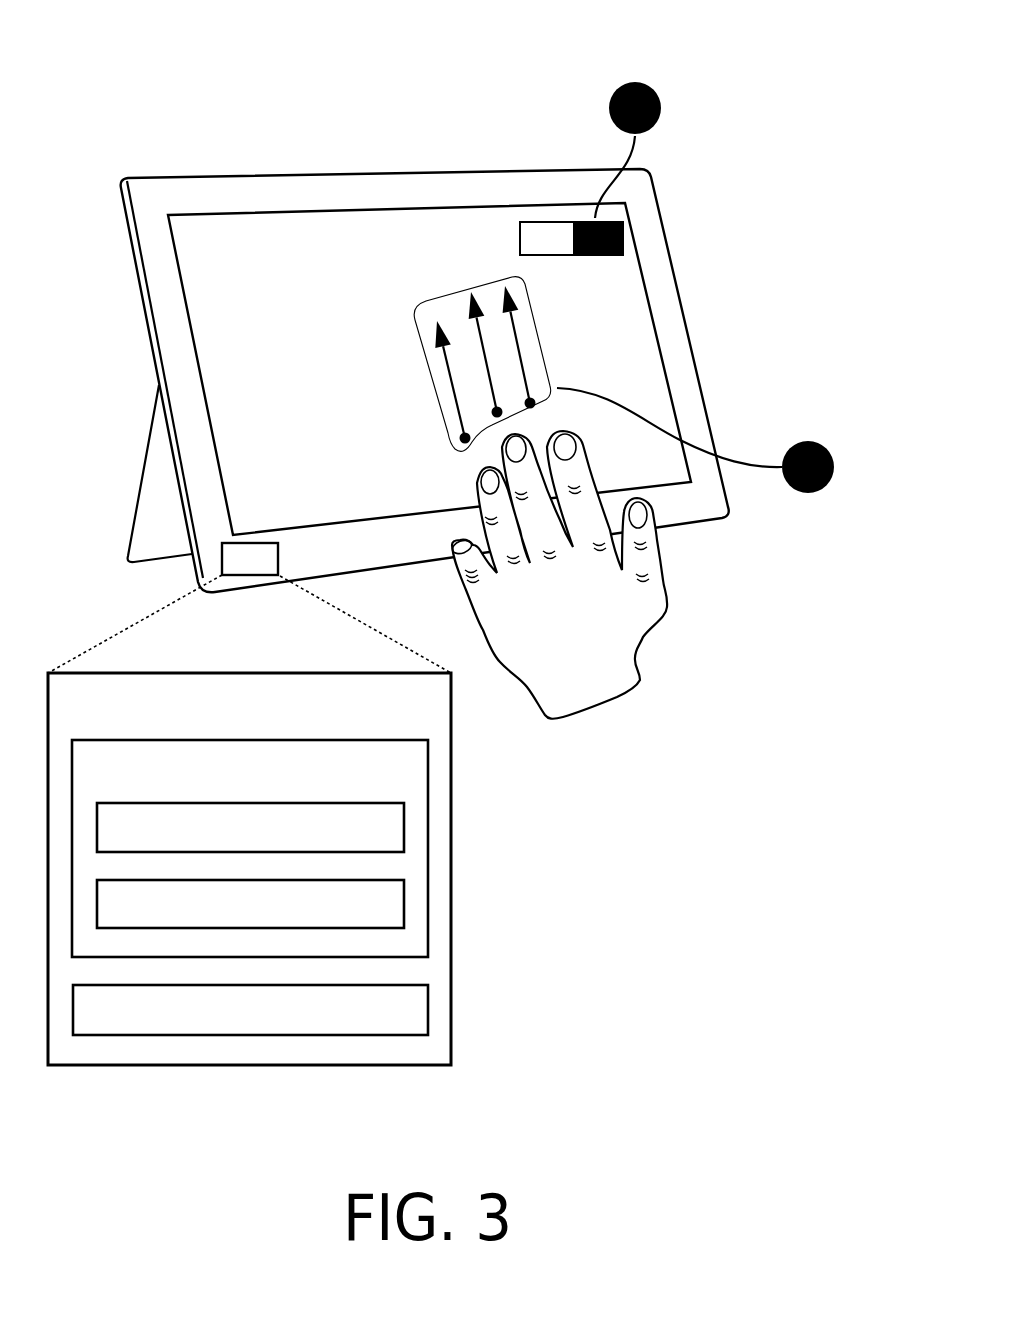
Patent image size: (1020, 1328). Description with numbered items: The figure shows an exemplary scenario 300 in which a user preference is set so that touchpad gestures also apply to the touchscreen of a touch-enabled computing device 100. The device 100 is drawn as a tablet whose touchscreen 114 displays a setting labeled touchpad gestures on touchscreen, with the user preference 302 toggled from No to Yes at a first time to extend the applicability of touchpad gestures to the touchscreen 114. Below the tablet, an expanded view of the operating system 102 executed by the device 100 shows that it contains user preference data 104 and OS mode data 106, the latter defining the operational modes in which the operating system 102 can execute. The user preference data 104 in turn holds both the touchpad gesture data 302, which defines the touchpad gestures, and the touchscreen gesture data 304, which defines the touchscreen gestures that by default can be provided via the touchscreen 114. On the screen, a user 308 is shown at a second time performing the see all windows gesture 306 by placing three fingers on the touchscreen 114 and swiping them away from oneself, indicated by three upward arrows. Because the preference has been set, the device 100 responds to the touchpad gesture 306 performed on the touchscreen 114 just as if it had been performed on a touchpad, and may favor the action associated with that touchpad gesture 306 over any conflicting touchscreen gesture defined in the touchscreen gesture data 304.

The exemplary scenario 300 is at (189, 49).
The touch-enabled computing device 100 is at (680, 285).
The touchscreen 114 is at (213, 244).
The operating system 102 is at (234, 572).
The user preference data 104 is at (368, 777).
The user preference / touchpad gesture data 302 is at (455, 215).
The touchscreen gesture data 304 is at (392, 916).
The OS mode data 106 is at (337, 1022).
The see all windows gesture 306 is at (543, 359).
The user 308 is at (653, 677).